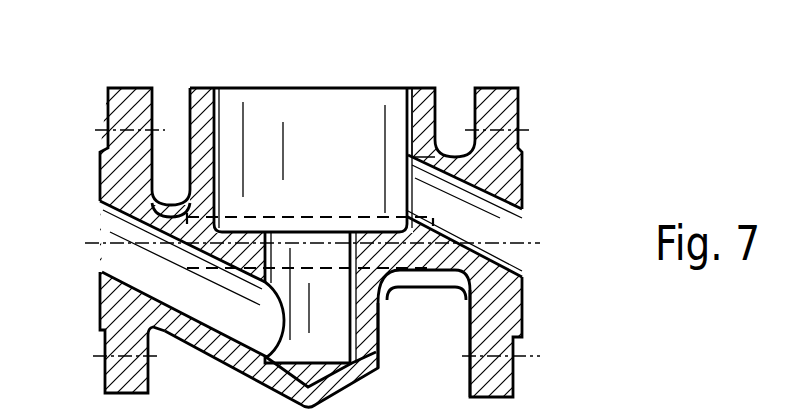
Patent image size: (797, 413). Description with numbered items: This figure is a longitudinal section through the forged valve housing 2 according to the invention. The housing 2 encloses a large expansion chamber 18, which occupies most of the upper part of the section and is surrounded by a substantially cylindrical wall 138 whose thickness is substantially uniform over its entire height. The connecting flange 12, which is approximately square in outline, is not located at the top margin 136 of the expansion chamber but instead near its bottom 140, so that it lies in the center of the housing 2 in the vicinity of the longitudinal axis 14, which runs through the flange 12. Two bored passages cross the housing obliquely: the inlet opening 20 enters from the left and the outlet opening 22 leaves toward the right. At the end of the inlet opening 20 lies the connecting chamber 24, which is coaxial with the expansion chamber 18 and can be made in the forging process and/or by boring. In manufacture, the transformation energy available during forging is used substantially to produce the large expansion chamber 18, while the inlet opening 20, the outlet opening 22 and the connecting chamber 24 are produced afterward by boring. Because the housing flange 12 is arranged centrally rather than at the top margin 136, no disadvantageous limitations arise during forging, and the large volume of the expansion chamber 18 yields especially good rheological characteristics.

The valve housing 2 is at (118, 155).
The flange 12 is at (388, 298).
The longitudinal axis 14 is at (83, 240).
The expansion chamber 18 is at (270, 130).
The inlet opening 20 is at (115, 258).
The outlet opening 22 is at (506, 223).
The connecting chamber 24 is at (340, 338).
The top margin 136 is at (428, 92).
The cylindrical wall 138 is at (200, 140).
The bottom 140 is at (375, 227).